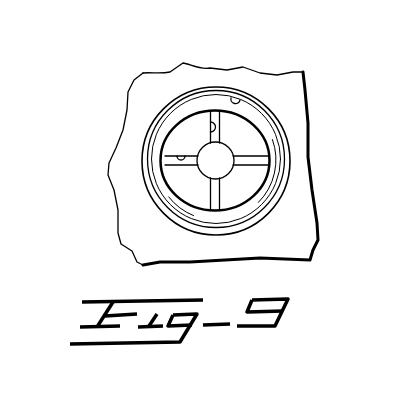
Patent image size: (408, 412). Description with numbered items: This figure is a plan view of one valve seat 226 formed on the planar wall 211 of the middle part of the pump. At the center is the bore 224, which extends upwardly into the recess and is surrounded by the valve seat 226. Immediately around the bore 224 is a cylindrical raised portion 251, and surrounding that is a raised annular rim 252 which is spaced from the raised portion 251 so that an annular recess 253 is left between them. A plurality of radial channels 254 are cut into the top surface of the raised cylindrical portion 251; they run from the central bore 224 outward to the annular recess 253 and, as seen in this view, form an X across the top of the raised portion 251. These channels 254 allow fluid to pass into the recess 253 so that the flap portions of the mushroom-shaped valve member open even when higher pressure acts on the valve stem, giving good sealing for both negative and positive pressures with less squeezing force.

The planar wall 211 is at (130, 198).
The bore 224 is at (221, 156).
The valve seat 226 is at (291, 179).
The cylindrical raised portion 251 is at (193, 185).
The raised annular rim 252 is at (217, 92).
The annular recess 253 is at (236, 100).
The radial channels 254 is at (208, 128).